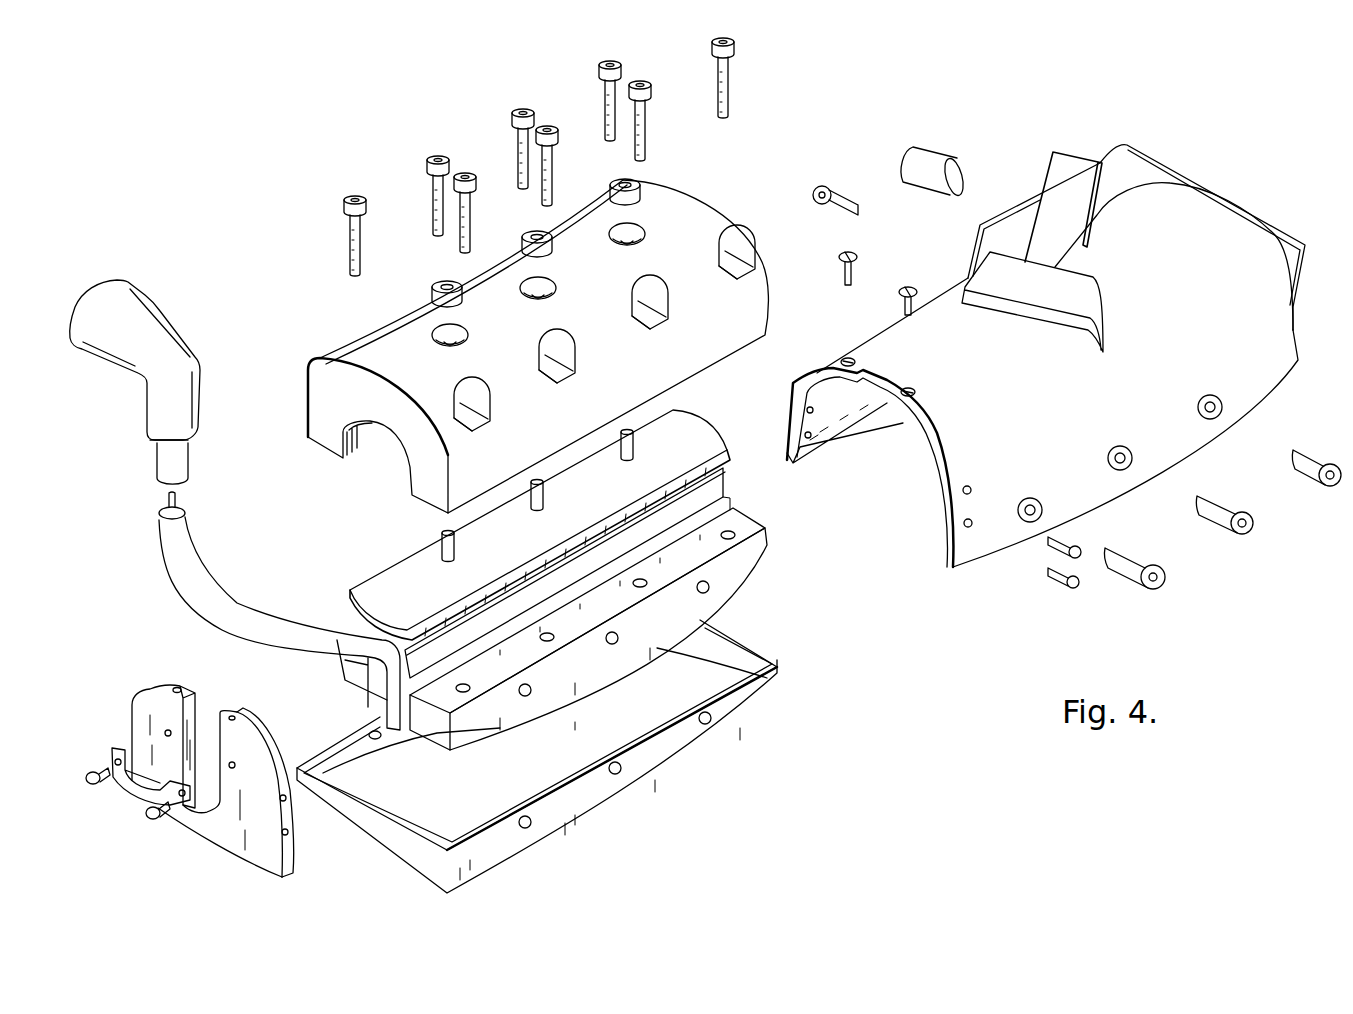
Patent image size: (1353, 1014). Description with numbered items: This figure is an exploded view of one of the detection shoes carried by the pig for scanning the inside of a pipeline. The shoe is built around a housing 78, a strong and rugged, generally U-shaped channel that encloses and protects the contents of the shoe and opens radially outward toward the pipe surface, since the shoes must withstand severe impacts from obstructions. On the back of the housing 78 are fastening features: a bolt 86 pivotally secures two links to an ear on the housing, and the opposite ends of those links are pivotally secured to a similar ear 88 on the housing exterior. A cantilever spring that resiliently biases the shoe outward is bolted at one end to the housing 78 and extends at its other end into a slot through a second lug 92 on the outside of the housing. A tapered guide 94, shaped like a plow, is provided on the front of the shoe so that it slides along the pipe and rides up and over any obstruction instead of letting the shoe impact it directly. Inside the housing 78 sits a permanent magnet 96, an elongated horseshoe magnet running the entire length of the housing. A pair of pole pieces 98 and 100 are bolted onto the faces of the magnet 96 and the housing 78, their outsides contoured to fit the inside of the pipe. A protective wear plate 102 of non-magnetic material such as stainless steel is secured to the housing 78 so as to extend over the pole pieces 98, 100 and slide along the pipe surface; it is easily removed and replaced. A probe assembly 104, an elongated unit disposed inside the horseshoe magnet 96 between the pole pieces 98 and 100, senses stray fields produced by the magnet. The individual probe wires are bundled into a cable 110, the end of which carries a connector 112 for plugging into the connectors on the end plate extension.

The housing 78 is at (1265, 365).
The bolt 86 is at (953, 162).
The ear 88 is at (1072, 167).
The second lug 92 is at (1110, 303).
The tapered guide 94 is at (1127, 163).
The permanent magnet 96 is at (403, 340).
The pole piece 98 is at (343, 623).
The pole piece 100 is at (725, 550).
The protective wear plate 102 is at (717, 733).
The probe assembly 104 is at (363, 687).
The cable 110 is at (208, 577).
The connector 112 is at (145, 322).